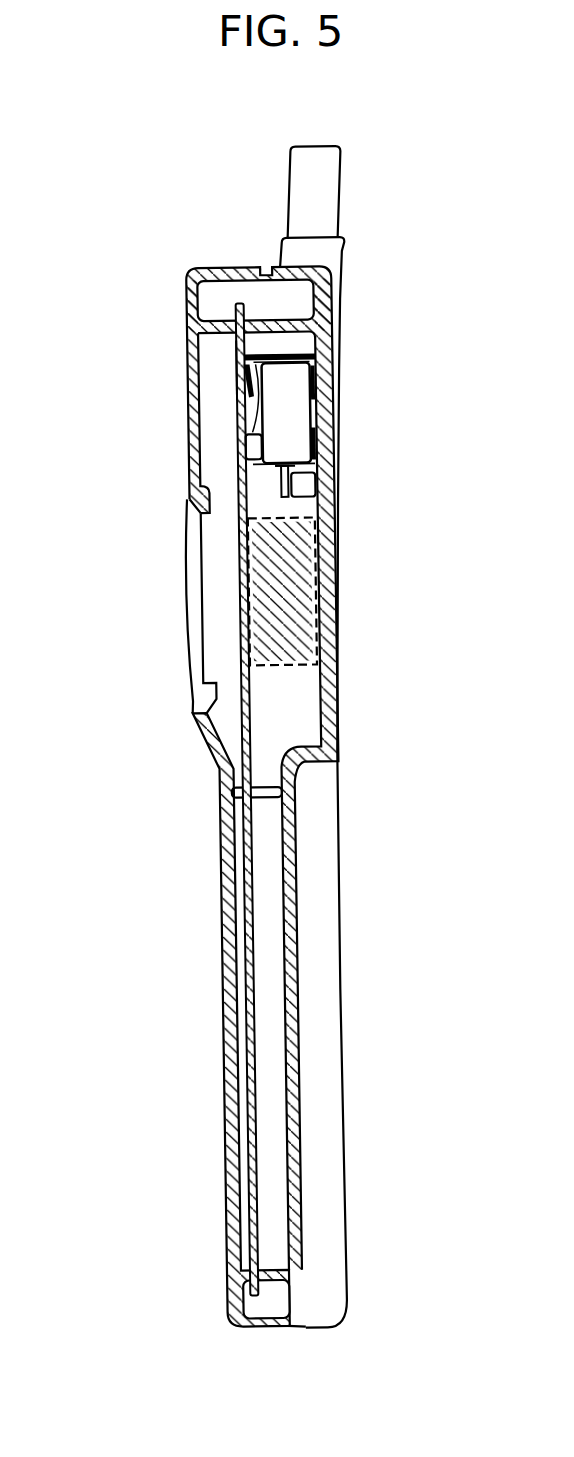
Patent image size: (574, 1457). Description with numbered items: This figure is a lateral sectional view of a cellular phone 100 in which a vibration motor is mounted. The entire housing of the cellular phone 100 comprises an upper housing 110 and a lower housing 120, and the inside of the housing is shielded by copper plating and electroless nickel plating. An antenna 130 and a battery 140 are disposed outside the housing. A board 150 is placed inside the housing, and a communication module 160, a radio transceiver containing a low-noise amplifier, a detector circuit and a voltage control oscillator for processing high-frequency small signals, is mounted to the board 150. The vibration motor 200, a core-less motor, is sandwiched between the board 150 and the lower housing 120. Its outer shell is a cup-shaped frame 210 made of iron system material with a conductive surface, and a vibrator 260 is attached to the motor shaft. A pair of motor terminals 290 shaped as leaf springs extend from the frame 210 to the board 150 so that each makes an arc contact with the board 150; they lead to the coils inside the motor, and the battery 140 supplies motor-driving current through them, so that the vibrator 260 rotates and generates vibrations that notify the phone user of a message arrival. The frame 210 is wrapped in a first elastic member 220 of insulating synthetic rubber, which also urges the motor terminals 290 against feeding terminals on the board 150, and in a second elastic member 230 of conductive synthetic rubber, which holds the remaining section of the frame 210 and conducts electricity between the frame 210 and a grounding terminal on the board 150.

The cellular phone 100 is at (183, 590).
The upper housing 110 is at (192, 368).
The lower housing 120 is at (325, 697).
The antenna 130 is at (322, 209).
The battery 140 is at (327, 887).
The board 150 is at (243, 745).
The communication module 160 is at (296, 592).
The vibration motor 200 is at (297, 420).
The cup-shaped frame 210 is at (288, 385).
The first elastic member 220 is at (257, 400).
The second elastic member 230 is at (252, 447).
The vibrator 260 is at (305, 485).
The motor terminals 290 is at (242, 365).